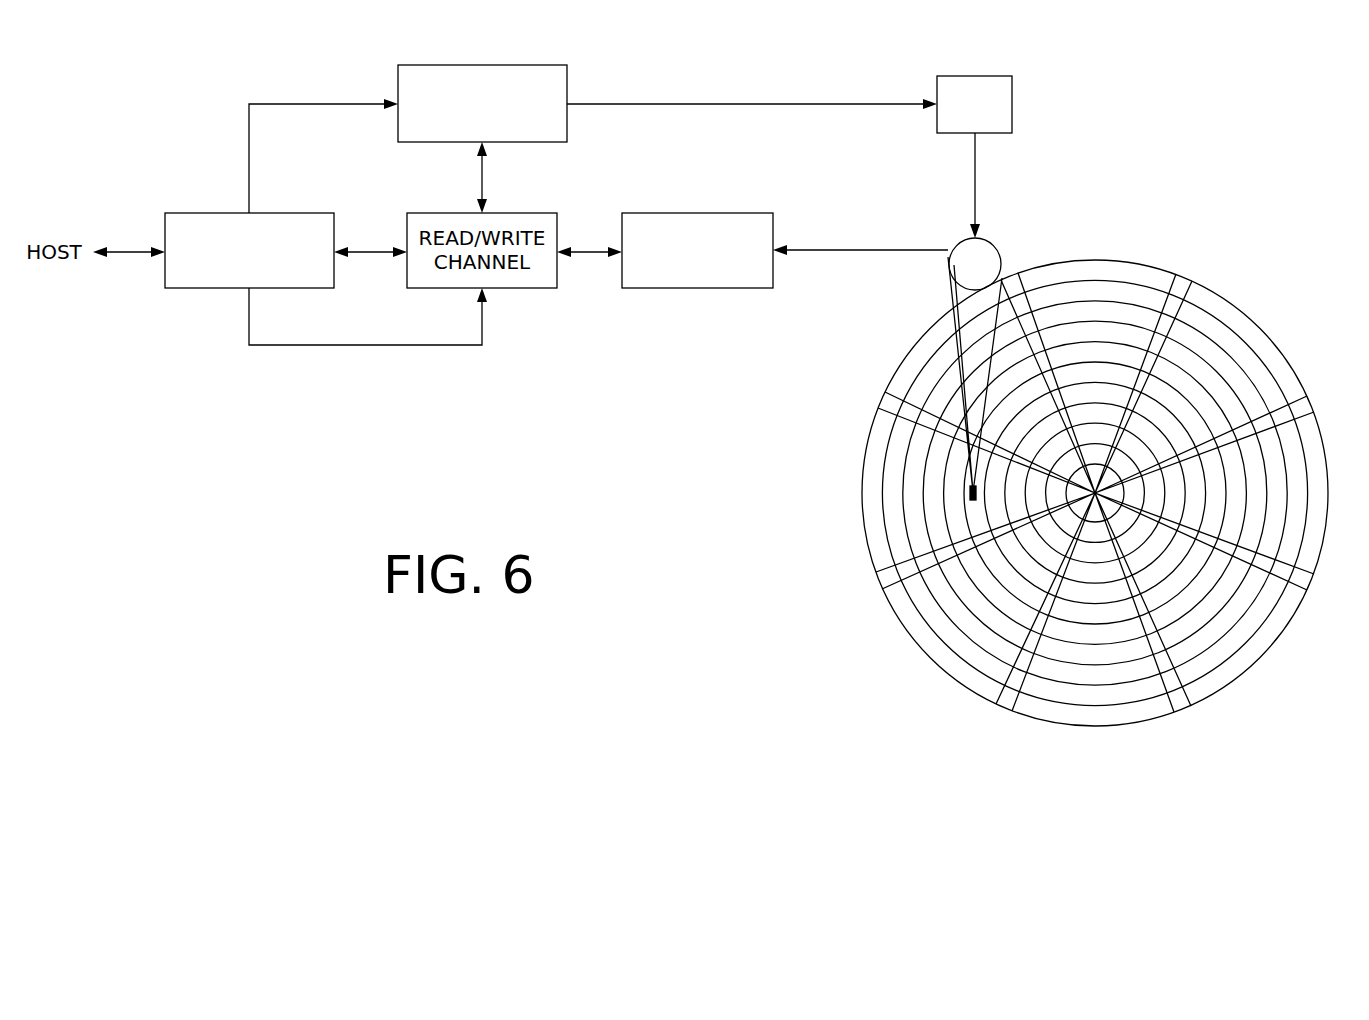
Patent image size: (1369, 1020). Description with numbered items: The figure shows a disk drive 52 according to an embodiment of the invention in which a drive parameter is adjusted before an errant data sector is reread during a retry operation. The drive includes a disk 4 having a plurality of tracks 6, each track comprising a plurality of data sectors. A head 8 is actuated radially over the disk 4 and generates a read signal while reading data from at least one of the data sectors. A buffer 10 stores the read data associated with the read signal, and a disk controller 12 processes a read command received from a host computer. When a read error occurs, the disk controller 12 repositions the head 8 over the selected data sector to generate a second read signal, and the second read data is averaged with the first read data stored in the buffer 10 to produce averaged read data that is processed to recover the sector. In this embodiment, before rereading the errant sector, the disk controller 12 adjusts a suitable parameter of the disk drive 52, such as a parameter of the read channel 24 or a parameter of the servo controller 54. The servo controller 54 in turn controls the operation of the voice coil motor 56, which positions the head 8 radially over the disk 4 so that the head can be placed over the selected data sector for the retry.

The disk 4 is at (1243, 290).
The track 6 is at (1093, 292).
The head 8 is at (965, 515).
The buffer 10 is at (697, 290).
The disk controller 12 is at (183, 290).
The read channel 24 is at (523, 213).
The disk drive 52 is at (1130, 75).
The servo controller 54 is at (481, 65).
The voice coil motor 56 is at (975, 76).